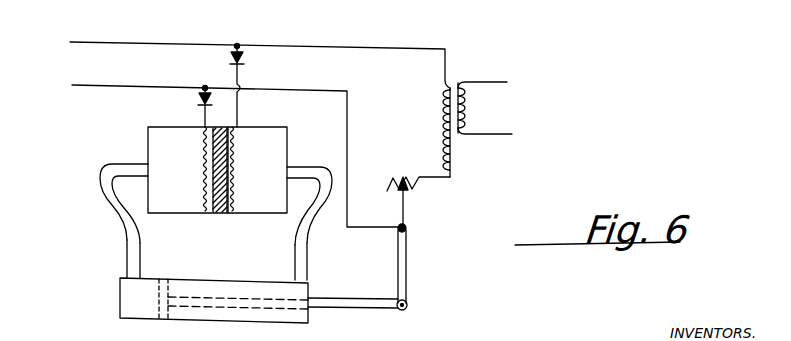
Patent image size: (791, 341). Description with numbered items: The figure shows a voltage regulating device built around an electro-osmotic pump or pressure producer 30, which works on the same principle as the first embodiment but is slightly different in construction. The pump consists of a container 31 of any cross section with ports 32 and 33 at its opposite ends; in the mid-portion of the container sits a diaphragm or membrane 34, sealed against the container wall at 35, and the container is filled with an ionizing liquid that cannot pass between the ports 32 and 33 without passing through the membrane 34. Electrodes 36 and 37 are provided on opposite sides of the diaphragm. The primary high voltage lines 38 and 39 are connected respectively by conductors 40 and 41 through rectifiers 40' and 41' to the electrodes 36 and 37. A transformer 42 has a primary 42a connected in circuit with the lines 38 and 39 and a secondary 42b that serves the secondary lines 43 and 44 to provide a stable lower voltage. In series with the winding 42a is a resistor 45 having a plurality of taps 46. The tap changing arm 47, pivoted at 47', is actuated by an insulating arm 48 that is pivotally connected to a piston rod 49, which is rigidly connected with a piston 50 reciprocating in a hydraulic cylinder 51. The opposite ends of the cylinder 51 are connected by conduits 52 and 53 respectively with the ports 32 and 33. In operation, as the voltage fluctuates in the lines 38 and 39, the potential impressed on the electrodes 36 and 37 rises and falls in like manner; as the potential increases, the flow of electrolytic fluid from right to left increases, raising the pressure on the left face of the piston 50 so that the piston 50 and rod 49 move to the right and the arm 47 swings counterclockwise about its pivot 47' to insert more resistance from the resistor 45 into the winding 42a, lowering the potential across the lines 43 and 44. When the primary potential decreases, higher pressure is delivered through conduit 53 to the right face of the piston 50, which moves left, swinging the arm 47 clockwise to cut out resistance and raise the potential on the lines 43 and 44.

The electro-osmotic pump or pressure producer 30 is at (257, 170).
The container 31 is at (180, 170).
The port 32 is at (140, 160).
The port 33 is at (294, 165).
The diaphragm or membrane 34 is at (220, 188).
The seal 35 is at (220, 127).
The electrode 36 is at (205, 170).
The electrode 37 is at (236, 166).
The primary high voltage line 38 is at (79, 85).
The primary high voltage line 39 is at (94, 42).
The conductor 40 is at (182, 116).
The rectifier 40' is at (184, 97).
The conductor 41 is at (257, 95).
The rectifier 41' is at (217, 56).
The transformer 42 is at (458, 76).
The primary winding 42a is at (440, 113).
The secondary winding 42b is at (470, 105).
The secondary line 43 is at (500, 82).
The secondary line 44 is at (512, 134).
The resistor 45 is at (386, 191).
The taps 46 is at (400, 190).
The tap changing arm 47 is at (435, 208).
The pivot 47' is at (375, 245).
The insulating arm 48 is at (407, 266).
The piston rod 49 is at (358, 305).
The piston 50 is at (159, 302).
The hydraulic cylinder 51 is at (120, 297).
The conduit 52 is at (127, 231).
The conduit 53 is at (295, 233).